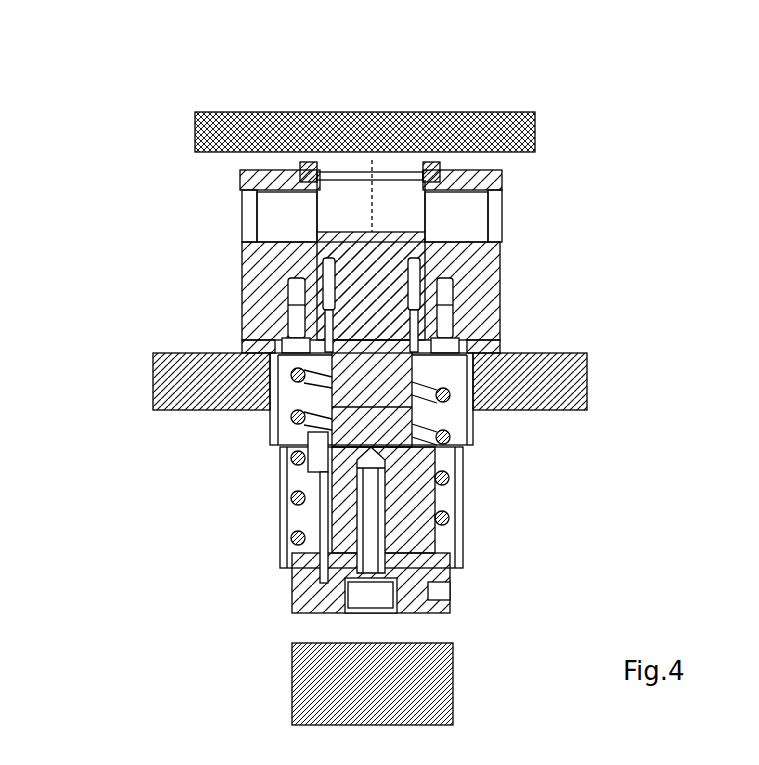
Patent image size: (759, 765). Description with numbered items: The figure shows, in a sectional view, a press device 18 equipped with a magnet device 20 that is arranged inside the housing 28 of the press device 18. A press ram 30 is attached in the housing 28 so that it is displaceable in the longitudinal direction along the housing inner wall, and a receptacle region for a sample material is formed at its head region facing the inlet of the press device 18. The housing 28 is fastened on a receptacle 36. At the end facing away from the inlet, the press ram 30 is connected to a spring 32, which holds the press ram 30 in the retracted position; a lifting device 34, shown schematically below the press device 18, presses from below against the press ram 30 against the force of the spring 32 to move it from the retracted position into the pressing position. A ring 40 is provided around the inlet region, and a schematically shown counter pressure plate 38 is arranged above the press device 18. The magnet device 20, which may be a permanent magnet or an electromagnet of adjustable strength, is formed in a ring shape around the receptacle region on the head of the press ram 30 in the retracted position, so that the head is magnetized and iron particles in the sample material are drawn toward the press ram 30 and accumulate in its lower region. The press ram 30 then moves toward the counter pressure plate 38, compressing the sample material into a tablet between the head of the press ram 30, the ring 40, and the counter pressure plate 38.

The press device 18 is at (175, 147).
The magnet device 20 is at (297, 225).
The housing 28 is at (498, 268).
The press ram 30 is at (490, 232).
The spring 32 is at (463, 515).
The lifting device 34 is at (347, 673).
The receptacle 36 is at (550, 385).
The counter pressure plate 38 is at (433, 130).
The ring 40 is at (432, 168).